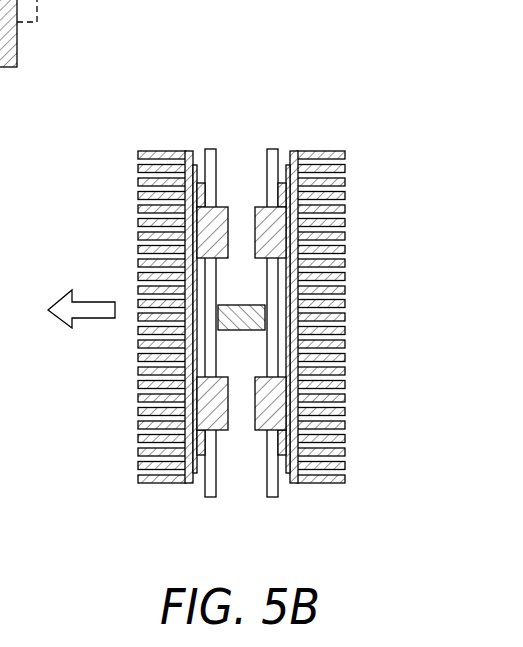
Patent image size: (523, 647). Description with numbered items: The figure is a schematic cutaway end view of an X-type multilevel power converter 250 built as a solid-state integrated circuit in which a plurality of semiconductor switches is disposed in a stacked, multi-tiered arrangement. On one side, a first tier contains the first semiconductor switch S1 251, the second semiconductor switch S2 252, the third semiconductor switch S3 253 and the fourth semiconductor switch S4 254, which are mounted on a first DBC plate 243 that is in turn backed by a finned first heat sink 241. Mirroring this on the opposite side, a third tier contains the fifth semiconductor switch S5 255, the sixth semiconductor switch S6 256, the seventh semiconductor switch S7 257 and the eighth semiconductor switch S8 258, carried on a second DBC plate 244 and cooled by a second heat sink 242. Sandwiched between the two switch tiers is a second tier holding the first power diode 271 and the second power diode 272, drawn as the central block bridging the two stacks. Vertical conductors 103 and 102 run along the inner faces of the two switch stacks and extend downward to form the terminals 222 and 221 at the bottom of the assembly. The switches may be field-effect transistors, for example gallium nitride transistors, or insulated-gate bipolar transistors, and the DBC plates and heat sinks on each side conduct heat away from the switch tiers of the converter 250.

The X-type multilevel power converter 250 is at (254, 76).
The first lead frame 103 is at (181, 309).
The second lead frame 102 is at (301, 309).
The first power diode 271 is at (246, 209).
The second power diode 272 is at (259, 296).
The fifth semiconductor switch S5 255 is at (125, 203).
The eighth semiconductor switch S8 258 is at (190, 211).
The first semiconductor switch S1 251 is at (355, 203).
The fourth semiconductor switch S4 254 is at (293, 211).
The sixth semiconductor switch S6 256 is at (125, 426).
The seventh semiconductor switch S7 257 is at (189, 409).
The second semiconductor switch S2 252 is at (357, 426).
The third semiconductor switch S3 253 is at (294, 409).
The second heat sink 242 is at (137, 483).
The first heat sink 241 is at (346, 483).
The second DBC plate 244 is at (195, 475).
The first DBC plate 243 is at (288, 475).
The first terminal 222 is at (216, 149).
The second terminal 221 is at (277, 149).